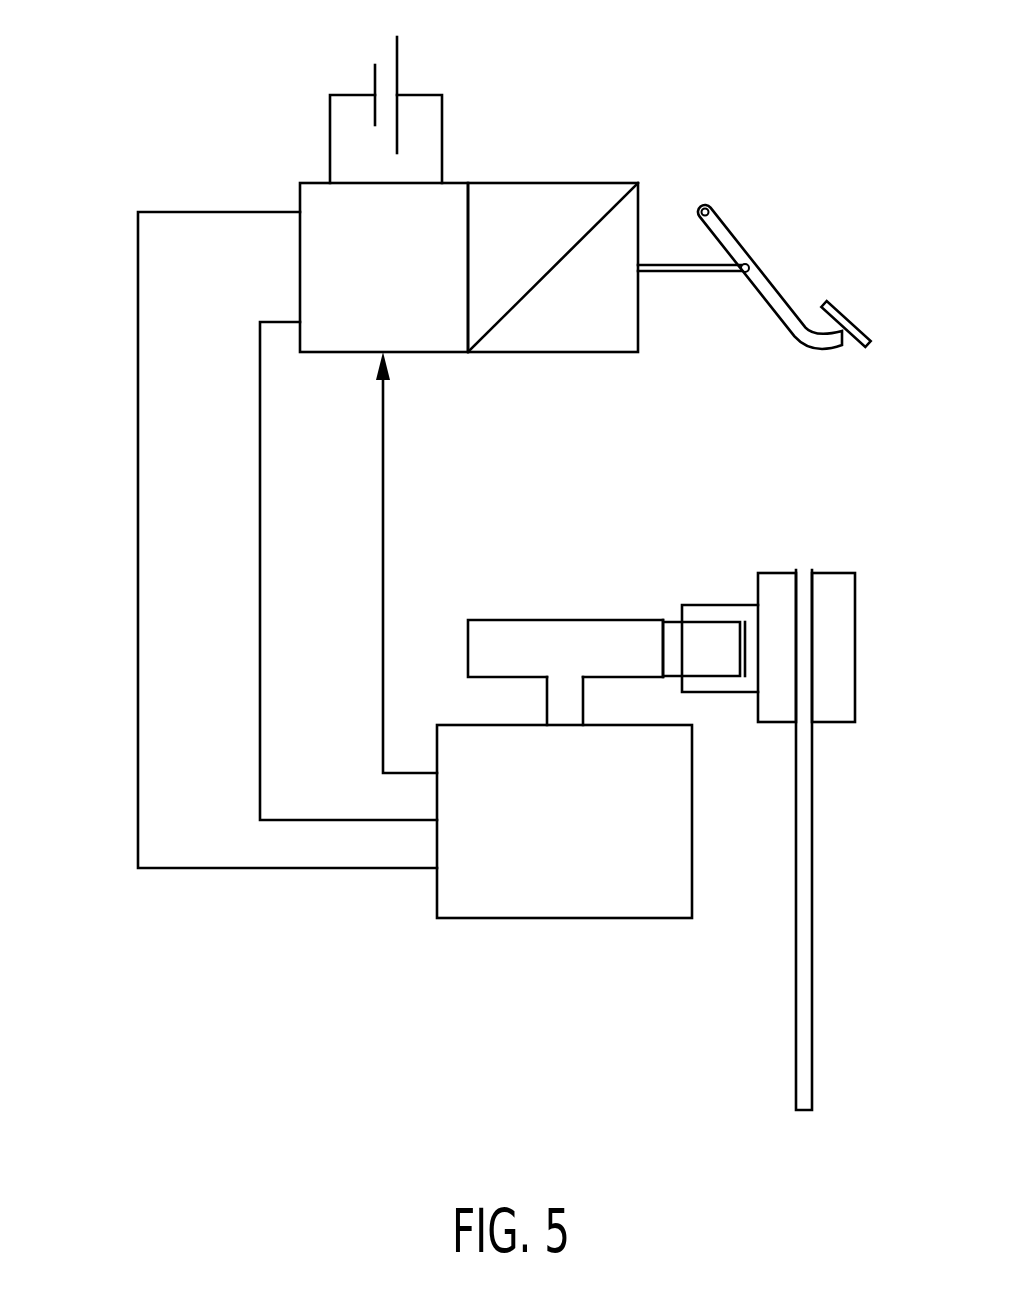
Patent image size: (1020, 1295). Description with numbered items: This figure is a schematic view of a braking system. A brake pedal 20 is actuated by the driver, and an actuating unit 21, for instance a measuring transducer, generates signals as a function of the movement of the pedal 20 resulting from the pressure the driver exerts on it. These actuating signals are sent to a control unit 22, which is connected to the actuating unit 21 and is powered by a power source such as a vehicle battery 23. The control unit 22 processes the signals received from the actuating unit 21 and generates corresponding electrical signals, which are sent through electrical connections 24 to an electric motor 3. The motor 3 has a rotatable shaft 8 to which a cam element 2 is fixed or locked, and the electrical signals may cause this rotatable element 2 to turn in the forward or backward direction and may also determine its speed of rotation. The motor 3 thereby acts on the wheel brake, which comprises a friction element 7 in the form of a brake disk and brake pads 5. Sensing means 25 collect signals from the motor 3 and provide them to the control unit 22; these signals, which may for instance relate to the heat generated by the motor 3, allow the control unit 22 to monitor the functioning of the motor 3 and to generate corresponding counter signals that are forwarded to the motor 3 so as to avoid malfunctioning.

The cam element 2 is at (606, 622).
The electric motor 3 is at (650, 900).
The brake pads 5 is at (783, 647).
The friction element 7 is at (813, 1082).
The rotatable shaft 8 is at (563, 702).
The brake pedal 20 is at (740, 239).
The actuating unit 21 is at (598, 353).
The control unit 22 is at (447, 353).
The vehicle battery 23 is at (416, 76).
The electrical connections 24 is at (260, 738).
The sensing means 25 is at (383, 510).